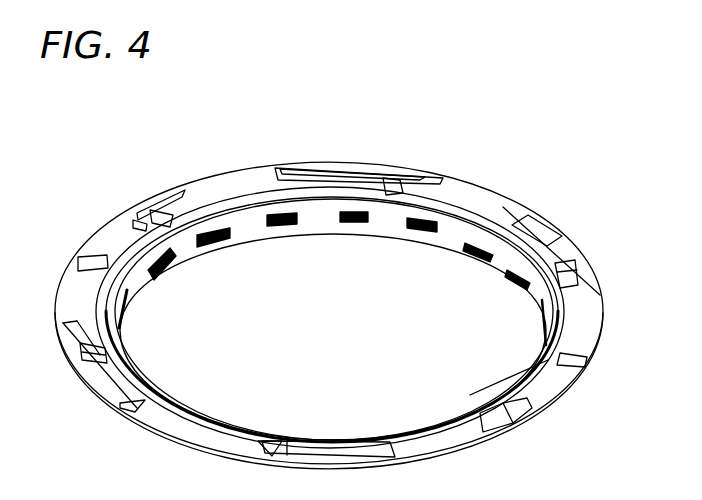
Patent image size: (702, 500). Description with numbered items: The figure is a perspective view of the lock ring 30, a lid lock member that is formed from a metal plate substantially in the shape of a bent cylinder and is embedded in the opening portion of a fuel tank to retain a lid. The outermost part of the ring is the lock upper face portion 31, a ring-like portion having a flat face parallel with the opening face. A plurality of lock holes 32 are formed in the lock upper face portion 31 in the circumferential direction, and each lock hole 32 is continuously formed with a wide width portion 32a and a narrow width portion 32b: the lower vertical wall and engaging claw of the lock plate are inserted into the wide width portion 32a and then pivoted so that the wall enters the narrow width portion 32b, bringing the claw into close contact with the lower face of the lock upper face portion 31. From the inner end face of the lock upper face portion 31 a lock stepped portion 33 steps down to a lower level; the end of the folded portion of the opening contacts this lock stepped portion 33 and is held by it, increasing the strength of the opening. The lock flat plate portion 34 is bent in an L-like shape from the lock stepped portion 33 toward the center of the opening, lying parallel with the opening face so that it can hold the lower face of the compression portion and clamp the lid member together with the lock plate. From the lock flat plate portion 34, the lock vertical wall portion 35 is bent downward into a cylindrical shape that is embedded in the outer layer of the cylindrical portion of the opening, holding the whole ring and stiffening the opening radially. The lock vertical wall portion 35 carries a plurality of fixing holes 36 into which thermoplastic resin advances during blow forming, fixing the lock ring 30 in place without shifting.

The lock ring 30 is at (107, 209).
The lock upper face portion 31 is at (585, 340).
The lock hole 32 is at (555, 240).
The wide width portion 32a is at (553, 237).
The narrow width portion 32b is at (593, 261).
The lock stepped portion 33 is at (565, 310).
The lock flat plate portion 34 is at (127, 277).
The lock vertical wall portion 35 is at (243, 227).
The fixing hole 36 is at (470, 247).